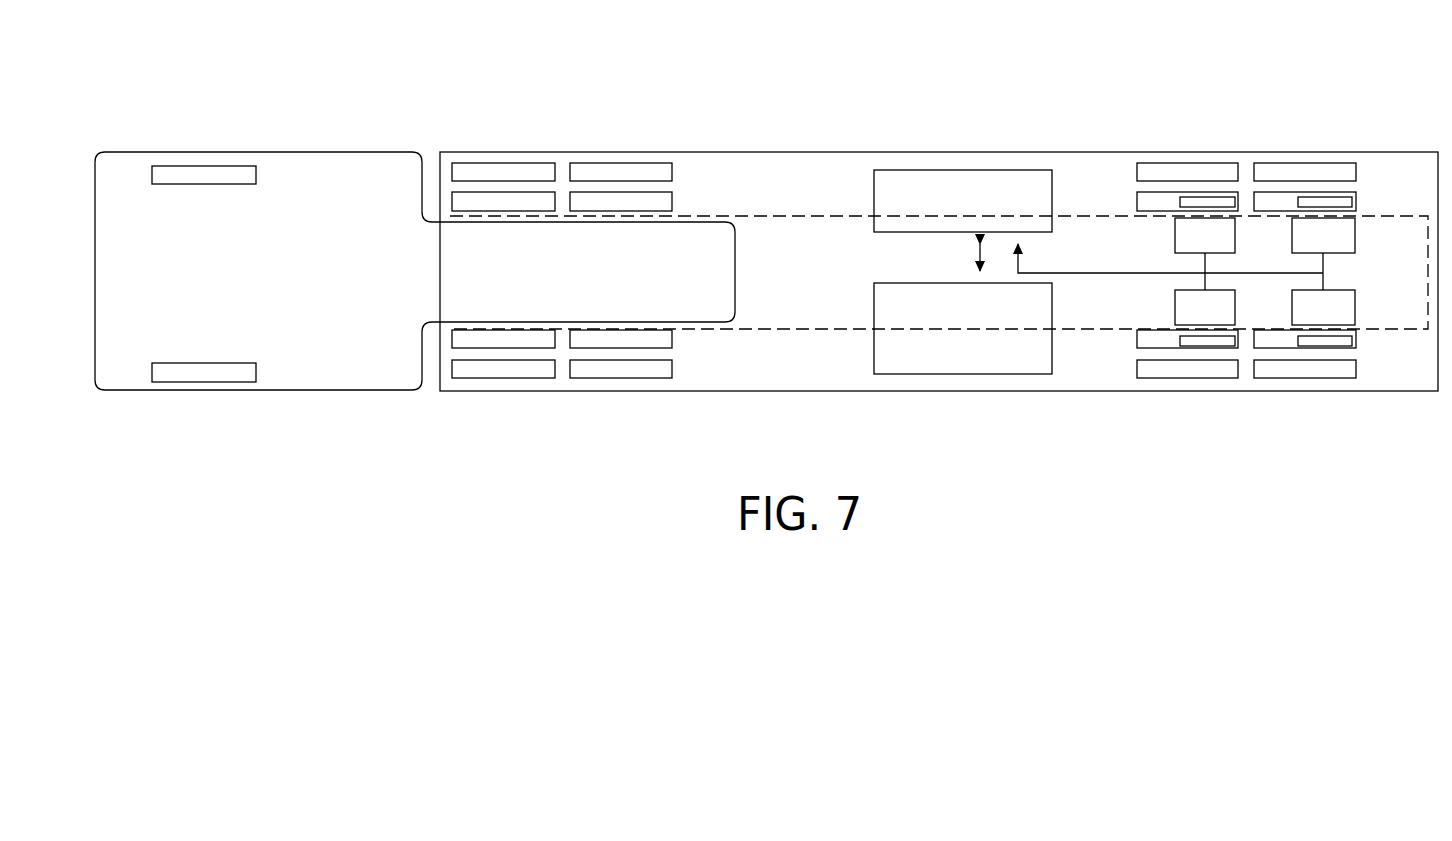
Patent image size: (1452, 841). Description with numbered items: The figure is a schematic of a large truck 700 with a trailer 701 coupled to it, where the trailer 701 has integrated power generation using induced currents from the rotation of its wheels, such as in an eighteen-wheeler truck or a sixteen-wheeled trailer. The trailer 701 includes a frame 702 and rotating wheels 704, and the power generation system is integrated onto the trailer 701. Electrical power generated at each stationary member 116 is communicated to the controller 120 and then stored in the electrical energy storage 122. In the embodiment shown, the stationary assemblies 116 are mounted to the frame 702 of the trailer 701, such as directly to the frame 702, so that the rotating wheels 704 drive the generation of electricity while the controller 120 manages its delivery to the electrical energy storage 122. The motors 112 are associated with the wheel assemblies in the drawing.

The truck 700 is at (259, 123).
The trailer 701 is at (1039, 67).
The frame 702 is at (770, 215).
The rotating wheels 704 is at (618, 144).
The electric motor 112 is at (1184, 198).
The stationary member 116 is at (1186, 271).
The controller 120 is at (888, 168).
The electrical energy storage 122 is at (874, 371).